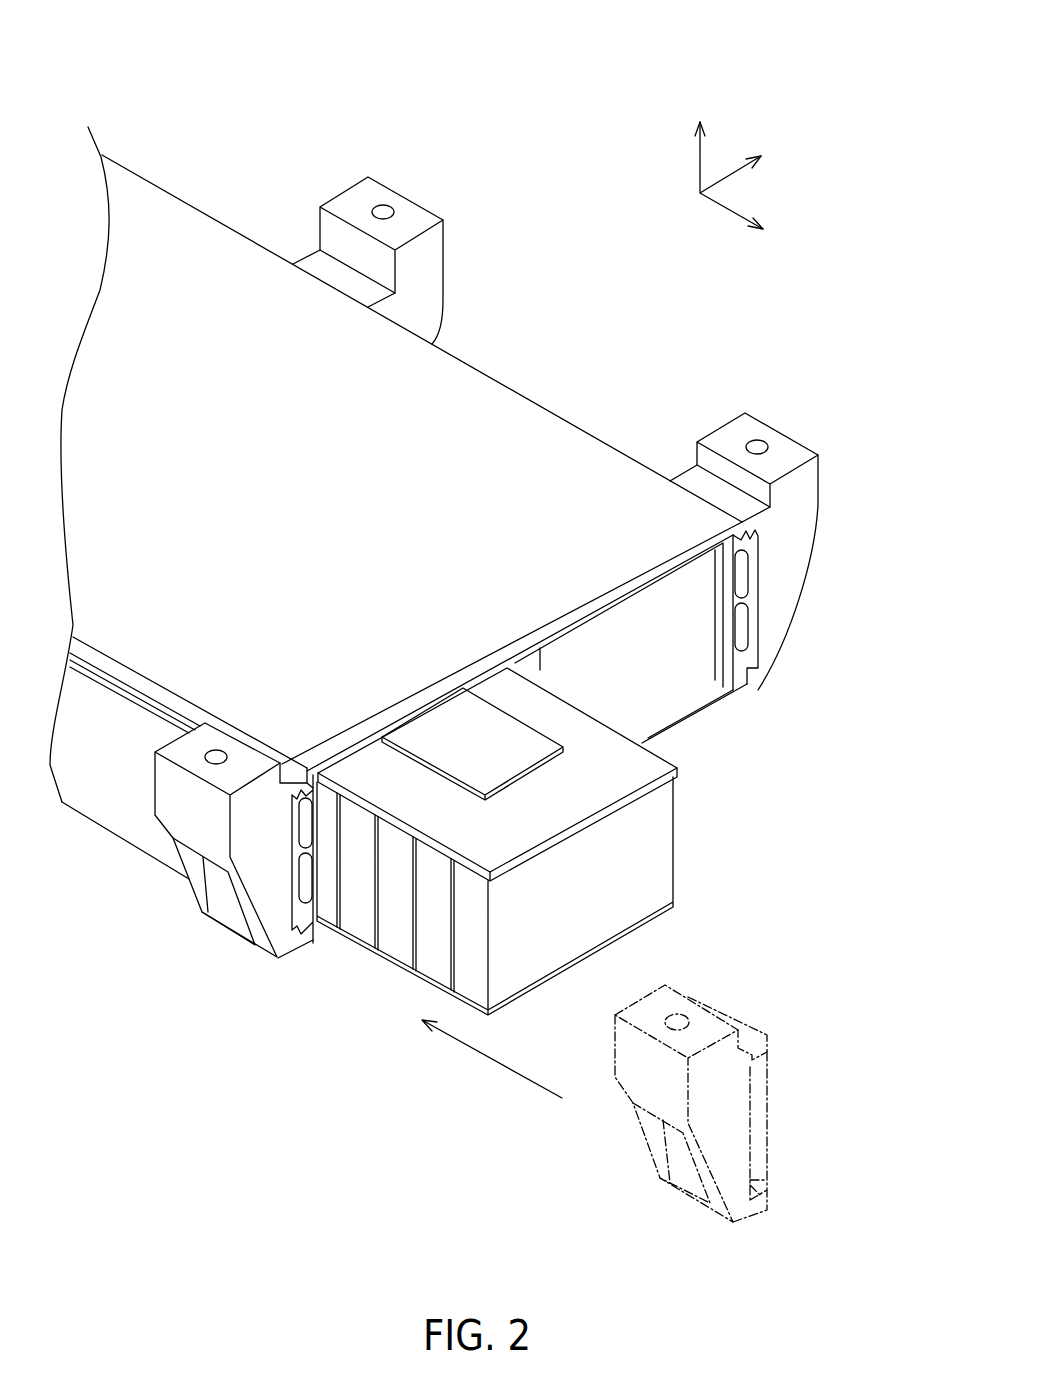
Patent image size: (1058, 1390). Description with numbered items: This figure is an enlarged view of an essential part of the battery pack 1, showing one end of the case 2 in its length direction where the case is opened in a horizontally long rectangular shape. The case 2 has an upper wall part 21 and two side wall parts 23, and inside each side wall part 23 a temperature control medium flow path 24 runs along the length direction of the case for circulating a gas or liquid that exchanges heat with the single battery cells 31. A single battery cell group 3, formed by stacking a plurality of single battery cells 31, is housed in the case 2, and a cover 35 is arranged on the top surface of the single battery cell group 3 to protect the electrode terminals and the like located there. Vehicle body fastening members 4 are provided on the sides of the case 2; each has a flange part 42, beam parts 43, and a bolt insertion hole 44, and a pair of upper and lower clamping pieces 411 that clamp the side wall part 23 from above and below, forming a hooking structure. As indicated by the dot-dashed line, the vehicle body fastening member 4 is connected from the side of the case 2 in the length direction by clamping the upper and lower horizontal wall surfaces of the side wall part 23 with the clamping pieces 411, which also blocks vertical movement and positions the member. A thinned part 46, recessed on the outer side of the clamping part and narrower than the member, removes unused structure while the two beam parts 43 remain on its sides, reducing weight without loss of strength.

The battery pack 1 is at (520, 92).
The case 2 is at (492, 363).
The upper wall part 21 is at (152, 205).
The side wall part 23 is at (103, 802).
The temperature control medium flow path 24 is at (743, 628).
The single battery cell group 3 is at (659, 682).
The single battery cell 31 is at (403, 945).
The cover 35 is at (365, 763).
The vehicle body fastening member 4 is at (466, 217).
The flange part 42 is at (342, 190).
The beam part 43 is at (813, 557).
The bolt insertion hole 44 is at (381, 206).
The thinned part 46 is at (237, 922).
The clamping piece 411 is at (312, 262).